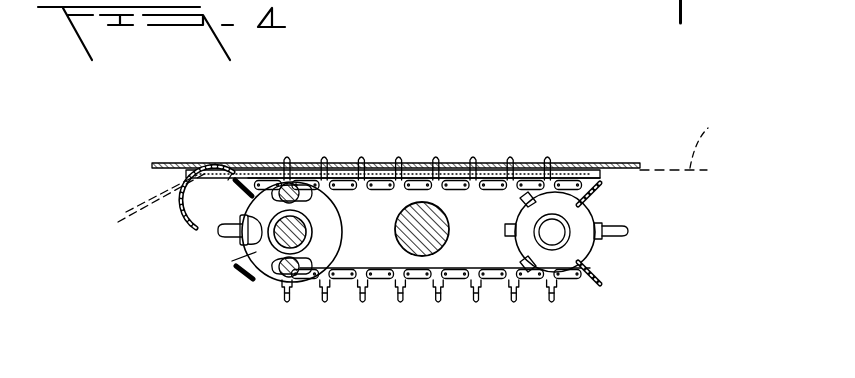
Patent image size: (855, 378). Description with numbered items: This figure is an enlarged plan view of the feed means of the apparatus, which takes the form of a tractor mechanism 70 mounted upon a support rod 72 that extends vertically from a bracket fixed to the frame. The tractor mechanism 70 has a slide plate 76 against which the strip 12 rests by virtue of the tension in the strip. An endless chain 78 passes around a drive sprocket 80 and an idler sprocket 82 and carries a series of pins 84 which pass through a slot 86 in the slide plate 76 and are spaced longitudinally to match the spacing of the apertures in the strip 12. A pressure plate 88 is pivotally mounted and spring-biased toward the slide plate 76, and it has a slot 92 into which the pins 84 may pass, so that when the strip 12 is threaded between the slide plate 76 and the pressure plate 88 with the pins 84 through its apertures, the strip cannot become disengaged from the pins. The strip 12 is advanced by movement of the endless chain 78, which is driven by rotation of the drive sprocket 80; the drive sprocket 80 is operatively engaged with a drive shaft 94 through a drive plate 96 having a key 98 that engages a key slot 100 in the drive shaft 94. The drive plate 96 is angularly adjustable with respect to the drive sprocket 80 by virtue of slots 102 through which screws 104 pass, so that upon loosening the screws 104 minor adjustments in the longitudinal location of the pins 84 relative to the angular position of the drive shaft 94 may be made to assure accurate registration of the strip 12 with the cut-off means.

The strip 12 is at (125, 207).
The tractor mechanism 70 is at (489, 180).
The support rod 72 is at (436, 218).
The slide plate 76 is at (197, 178).
The endless chain 78 is at (383, 285).
The drive sprocket 80 is at (246, 238).
The idler sprocket 82 is at (582, 243).
The pins 84 is at (364, 163).
The slot 86 is at (240, 181).
The pressure plate 88 is at (213, 165).
The slot 92 is at (236, 168).
The drive shaft 94 is at (260, 266).
The drive plate 96 is at (342, 197).
The key 98 is at (318, 238).
The key slot 100 is at (308, 232).
The slots 102 is at (300, 272).
The screws 104 is at (285, 278).